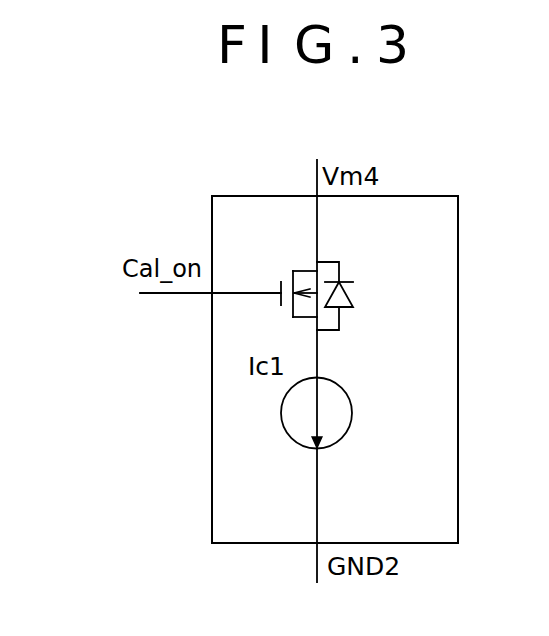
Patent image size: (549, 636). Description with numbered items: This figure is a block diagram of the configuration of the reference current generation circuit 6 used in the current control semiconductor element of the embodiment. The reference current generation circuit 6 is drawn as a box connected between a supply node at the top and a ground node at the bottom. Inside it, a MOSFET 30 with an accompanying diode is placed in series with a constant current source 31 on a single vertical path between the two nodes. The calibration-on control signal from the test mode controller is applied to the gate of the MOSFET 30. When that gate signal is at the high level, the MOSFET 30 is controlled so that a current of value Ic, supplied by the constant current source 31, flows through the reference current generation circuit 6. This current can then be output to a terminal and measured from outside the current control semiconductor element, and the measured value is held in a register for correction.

The reference current generation circuit 6 is at (458, 342).
The MOSFET 30 is at (340, 265).
The constant current source 31 is at (338, 383).